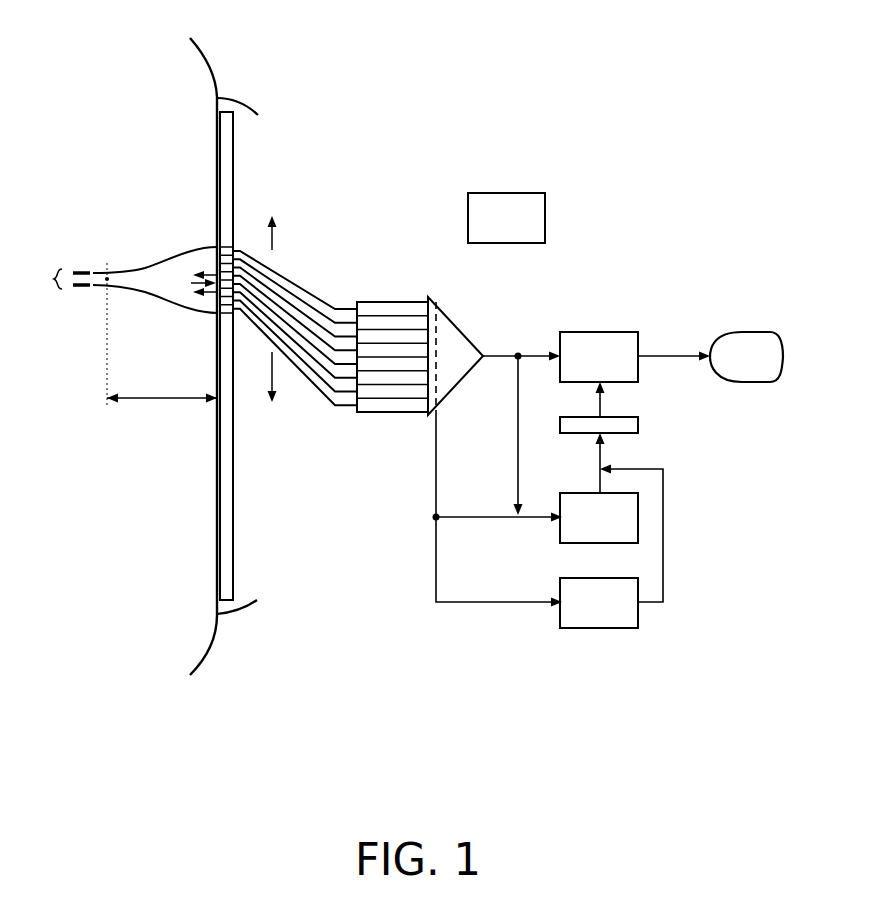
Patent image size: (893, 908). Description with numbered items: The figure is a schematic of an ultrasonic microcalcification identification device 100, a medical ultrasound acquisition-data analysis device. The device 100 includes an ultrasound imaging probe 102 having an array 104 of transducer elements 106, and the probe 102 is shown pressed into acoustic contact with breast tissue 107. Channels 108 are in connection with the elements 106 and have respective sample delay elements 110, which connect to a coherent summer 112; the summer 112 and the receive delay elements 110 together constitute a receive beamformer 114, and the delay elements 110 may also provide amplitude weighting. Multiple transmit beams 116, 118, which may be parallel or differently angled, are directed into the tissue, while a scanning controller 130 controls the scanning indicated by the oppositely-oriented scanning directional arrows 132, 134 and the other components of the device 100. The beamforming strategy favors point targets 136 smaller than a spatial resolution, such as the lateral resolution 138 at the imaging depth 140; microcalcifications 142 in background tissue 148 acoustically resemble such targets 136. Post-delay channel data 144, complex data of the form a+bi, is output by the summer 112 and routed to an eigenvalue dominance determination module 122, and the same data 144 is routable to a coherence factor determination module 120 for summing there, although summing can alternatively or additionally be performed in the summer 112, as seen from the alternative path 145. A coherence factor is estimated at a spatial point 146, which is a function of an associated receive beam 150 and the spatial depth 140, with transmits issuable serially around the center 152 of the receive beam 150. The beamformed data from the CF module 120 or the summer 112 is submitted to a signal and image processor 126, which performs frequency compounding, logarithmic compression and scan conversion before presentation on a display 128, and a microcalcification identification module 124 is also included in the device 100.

The ultrasonic microcalcification identification device 100 is at (347, 695).
The ultrasound imaging probe 102 is at (255, 102).
The array 104 is at (236, 151).
The transducer elements 106 is at (224, 248).
The breast tissue 107 is at (205, 50).
The channels 108 is at (347, 303).
The sample delay elements 110 is at (393, 302).
The coherent summer 112 is at (457, 323).
The receive beamformer 114 is at (365, 420).
The transmit beam 116 is at (207, 275).
The transmit beam 118 is at (207, 295).
The coherence factor determination module 120 is at (638, 517).
The eigenvalue dominance determination module 122 is at (600, 628).
The microcalcification identification module 124 is at (638, 425).
The signal and image processor 126 is at (600, 332).
The display 128 is at (750, 332).
The scanning controller 130 is at (508, 193).
The scanning directional arrow 132 is at (273, 238).
The scanning directional arrow 134 is at (273, 373).
The point target 136 is at (118, 277).
The lateral resolution 138 is at (56, 270).
The imaging depth 140 is at (158, 402).
The microcalcification 142 is at (90, 308).
The post-delay channel data 144 is at (435, 490).
The alternative path 145 is at (517, 435).
The spatial point 146 is at (113, 295).
The background tissue 148 is at (98, 262).
The receive beam 150 is at (165, 297).
The center of the receive beam 152 is at (187, 283).